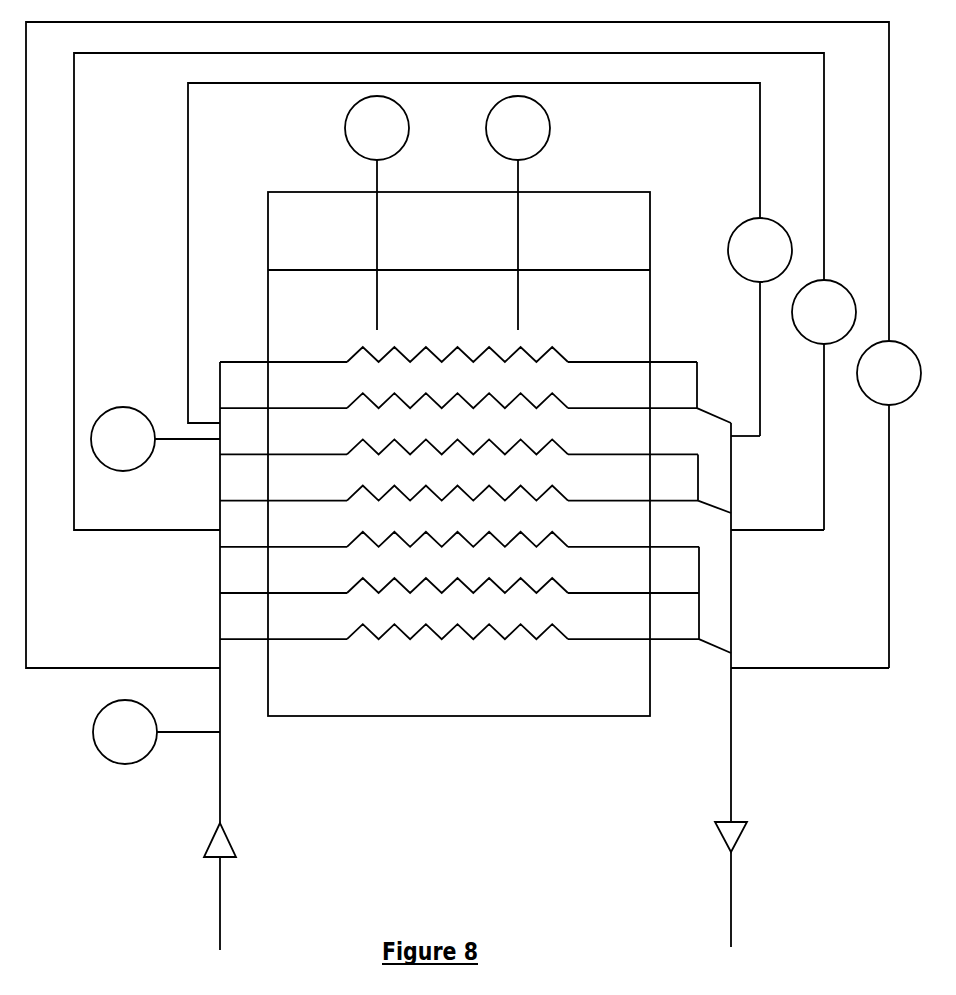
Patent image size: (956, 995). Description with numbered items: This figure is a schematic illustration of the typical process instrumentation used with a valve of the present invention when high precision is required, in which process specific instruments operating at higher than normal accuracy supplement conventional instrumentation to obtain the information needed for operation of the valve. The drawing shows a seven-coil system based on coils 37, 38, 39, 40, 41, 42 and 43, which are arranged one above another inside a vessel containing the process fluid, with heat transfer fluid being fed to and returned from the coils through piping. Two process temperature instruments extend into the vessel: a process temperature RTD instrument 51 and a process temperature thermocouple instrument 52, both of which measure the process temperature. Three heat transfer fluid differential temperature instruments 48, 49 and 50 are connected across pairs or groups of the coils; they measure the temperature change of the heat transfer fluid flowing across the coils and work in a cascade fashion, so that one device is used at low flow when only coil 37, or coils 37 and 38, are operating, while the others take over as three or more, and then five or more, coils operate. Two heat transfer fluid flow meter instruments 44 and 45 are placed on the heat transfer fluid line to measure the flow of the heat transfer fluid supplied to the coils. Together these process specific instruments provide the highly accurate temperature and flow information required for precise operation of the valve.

The coil 37 is at (458, 350).
The coil 38 is at (458, 396).
The coil 39 is at (459, 442).
The coil 40 is at (459, 488).
The coil 41 is at (459, 534).
The coil 42 is at (459, 581).
The coil 43 is at (459, 627).
The heat transfer fluid flow meter instrument 44 is at (155, 439).
The heat transfer fluid flow meter instrument 45 is at (156, 732).
The heat transfer fluid differential temperature instrument 48 is at (760, 250).
The heat transfer fluid differential temperature instrument 49 is at (824, 312).
The heat transfer fluid differential temperature instrument 50 is at (889, 373).
The process temperature RTD instrument 51 is at (377, 213).
The process temperature thermocouple instrument 52 is at (518, 213).